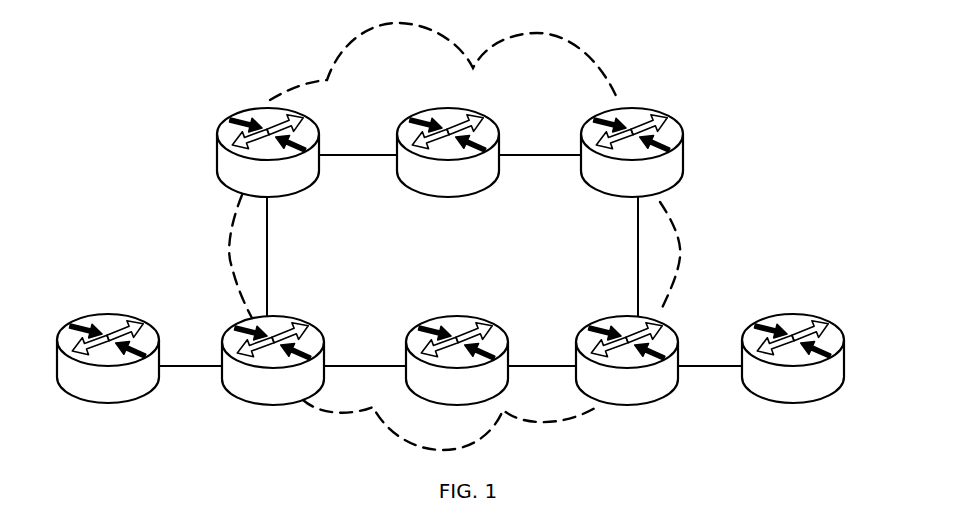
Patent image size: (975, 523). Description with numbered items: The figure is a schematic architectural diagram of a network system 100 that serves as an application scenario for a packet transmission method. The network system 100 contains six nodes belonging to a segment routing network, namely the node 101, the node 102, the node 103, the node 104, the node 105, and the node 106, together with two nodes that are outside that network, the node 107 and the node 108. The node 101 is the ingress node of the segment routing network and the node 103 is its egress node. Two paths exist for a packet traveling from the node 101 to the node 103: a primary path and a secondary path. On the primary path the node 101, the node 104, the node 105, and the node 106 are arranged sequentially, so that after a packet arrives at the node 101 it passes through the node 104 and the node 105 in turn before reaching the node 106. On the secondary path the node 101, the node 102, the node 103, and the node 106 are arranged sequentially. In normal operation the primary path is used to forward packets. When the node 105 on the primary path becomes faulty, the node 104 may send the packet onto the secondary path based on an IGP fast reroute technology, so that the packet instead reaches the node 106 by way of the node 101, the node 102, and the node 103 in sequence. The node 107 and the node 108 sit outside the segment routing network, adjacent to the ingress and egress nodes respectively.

The network system 100 is at (275, 43).
The node 101 is at (317, 332).
The node 102 is at (501, 332).
The node 103 is at (672, 332).
The node 104 is at (314, 125).
The node 105 is at (492, 126).
The node 106 is at (674, 126).
The node 107 is at (151, 332).
The node 108 is at (836, 332).